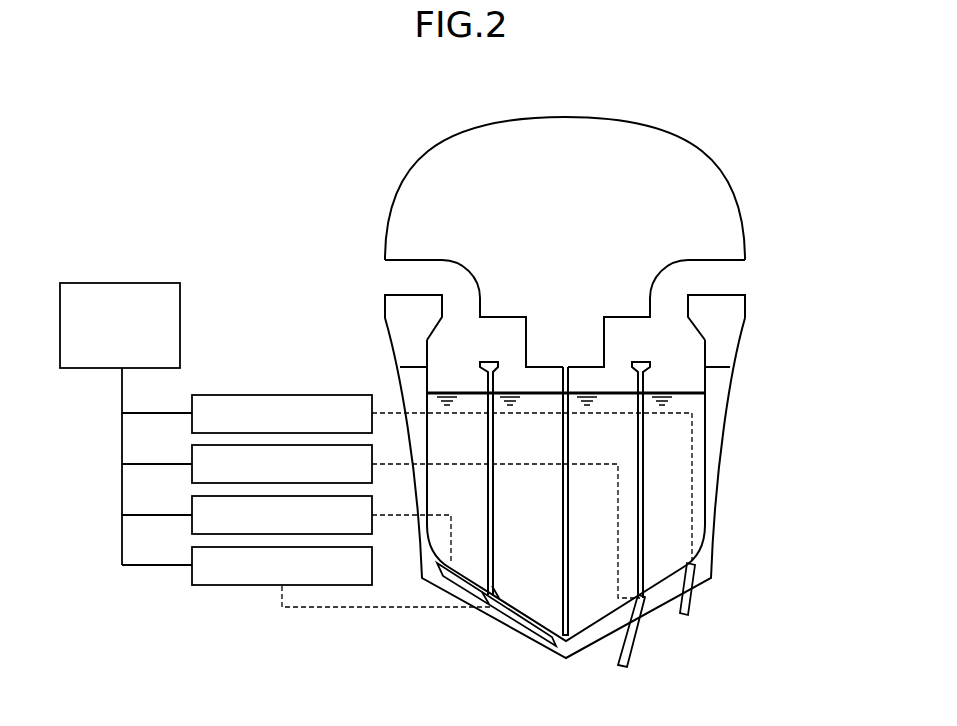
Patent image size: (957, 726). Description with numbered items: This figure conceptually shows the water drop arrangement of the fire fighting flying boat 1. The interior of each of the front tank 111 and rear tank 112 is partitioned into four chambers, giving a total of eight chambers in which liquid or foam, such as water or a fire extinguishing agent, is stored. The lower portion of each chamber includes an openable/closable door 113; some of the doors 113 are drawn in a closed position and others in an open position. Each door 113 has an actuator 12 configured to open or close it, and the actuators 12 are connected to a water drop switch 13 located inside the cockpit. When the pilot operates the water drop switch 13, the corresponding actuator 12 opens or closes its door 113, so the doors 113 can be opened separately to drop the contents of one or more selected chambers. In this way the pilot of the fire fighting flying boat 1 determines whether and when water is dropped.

The fire fighting flying boat 1 is at (724, 120).
The actuator 12 is at (192, 402).
The water drop switch 13 is at (120, 282).
The front tank 111 is at (705, 458).
The rear tank 112 is at (565, 488).
The door 113 is at (445, 580).